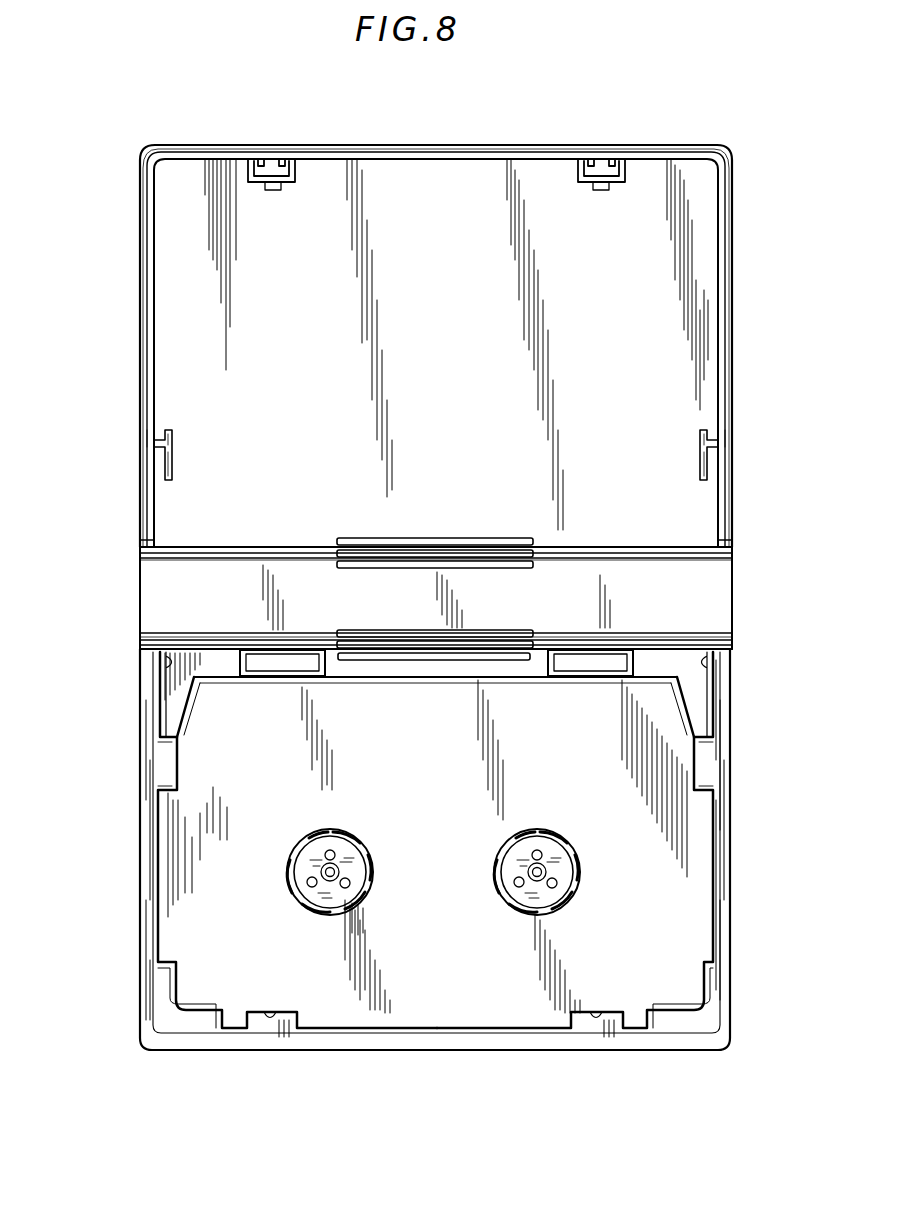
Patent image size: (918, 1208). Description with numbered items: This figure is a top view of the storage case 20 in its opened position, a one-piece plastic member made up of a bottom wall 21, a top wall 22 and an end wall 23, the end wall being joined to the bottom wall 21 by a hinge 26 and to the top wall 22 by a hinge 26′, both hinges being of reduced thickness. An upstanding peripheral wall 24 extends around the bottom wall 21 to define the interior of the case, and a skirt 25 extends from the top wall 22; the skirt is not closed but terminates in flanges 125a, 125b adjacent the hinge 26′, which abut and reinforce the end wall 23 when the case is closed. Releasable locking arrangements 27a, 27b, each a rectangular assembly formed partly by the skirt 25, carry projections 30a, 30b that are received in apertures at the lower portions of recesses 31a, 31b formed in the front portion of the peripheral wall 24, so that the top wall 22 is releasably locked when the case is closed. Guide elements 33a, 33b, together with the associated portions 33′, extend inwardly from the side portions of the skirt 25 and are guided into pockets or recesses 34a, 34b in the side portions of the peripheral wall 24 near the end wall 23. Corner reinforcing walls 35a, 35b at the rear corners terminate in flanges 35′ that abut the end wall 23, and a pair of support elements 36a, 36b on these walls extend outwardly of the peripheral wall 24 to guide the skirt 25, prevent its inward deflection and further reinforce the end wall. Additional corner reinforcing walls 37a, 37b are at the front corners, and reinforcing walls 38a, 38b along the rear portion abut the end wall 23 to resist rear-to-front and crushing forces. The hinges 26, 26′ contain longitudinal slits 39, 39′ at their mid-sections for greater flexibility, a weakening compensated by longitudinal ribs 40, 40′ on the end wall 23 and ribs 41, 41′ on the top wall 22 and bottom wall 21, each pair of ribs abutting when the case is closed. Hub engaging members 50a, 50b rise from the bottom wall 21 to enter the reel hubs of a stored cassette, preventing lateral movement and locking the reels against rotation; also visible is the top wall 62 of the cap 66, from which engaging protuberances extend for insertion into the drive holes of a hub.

The storage case 20 is at (756, 177).
The bottom wall 21 is at (668, 928).
The top wall 22 is at (160, 312).
The end wall 23 is at (720, 608).
The peripheral wall 24 is at (728, 870).
The skirt 25 is at (145, 264).
The hinge 26 is at (735, 640).
The hinge 26′ is at (736, 558).
The releasable locking arrangement 27a is at (257, 202).
The releasable locking arrangement 27b is at (578, 199).
The projection 30a is at (285, 190).
The projection 30b is at (604, 190).
The recess 31a is at (272, 1015).
The recess 31b is at (592, 1012).
The lid latch hook support 33′ is at (156, 440).
The guide element 33a is at (175, 455).
The guide element 33b is at (697, 458).
The recess 34a is at (176, 768).
The recess 34b is at (700, 778).
The flange 35′ is at (192, 680).
The corner reinforcing wall 35a is at (175, 722).
The corner reinforcing wall 35b is at (700, 722).
The catch 36a is at (162, 653).
The support element 36b is at (712, 654).
The corner reinforcing wall 37a is at (175, 995).
The corner reinforcing wall 37b is at (695, 998).
The reinforcing wall 38a is at (272, 650).
The reinforcing wall 38b is at (578, 650).
The longitudinal slit 39 is at (500, 549).
The longitudinal slit 39′ is at (430, 645).
The longitudinal rib 40 is at (398, 570).
The longitudinal rib 40′ is at (515, 629).
The longitudinal rib 41 is at (440, 537).
The longitudinal rib 41′ is at (370, 660).
The hub engaging member 50a is at (291, 836).
The hub engaging member 50b is at (564, 810).
The top wall 62 is at (368, 862).
The cap 66 is at (309, 880).
The flange 125a is at (148, 540).
The flange 125b is at (735, 542).